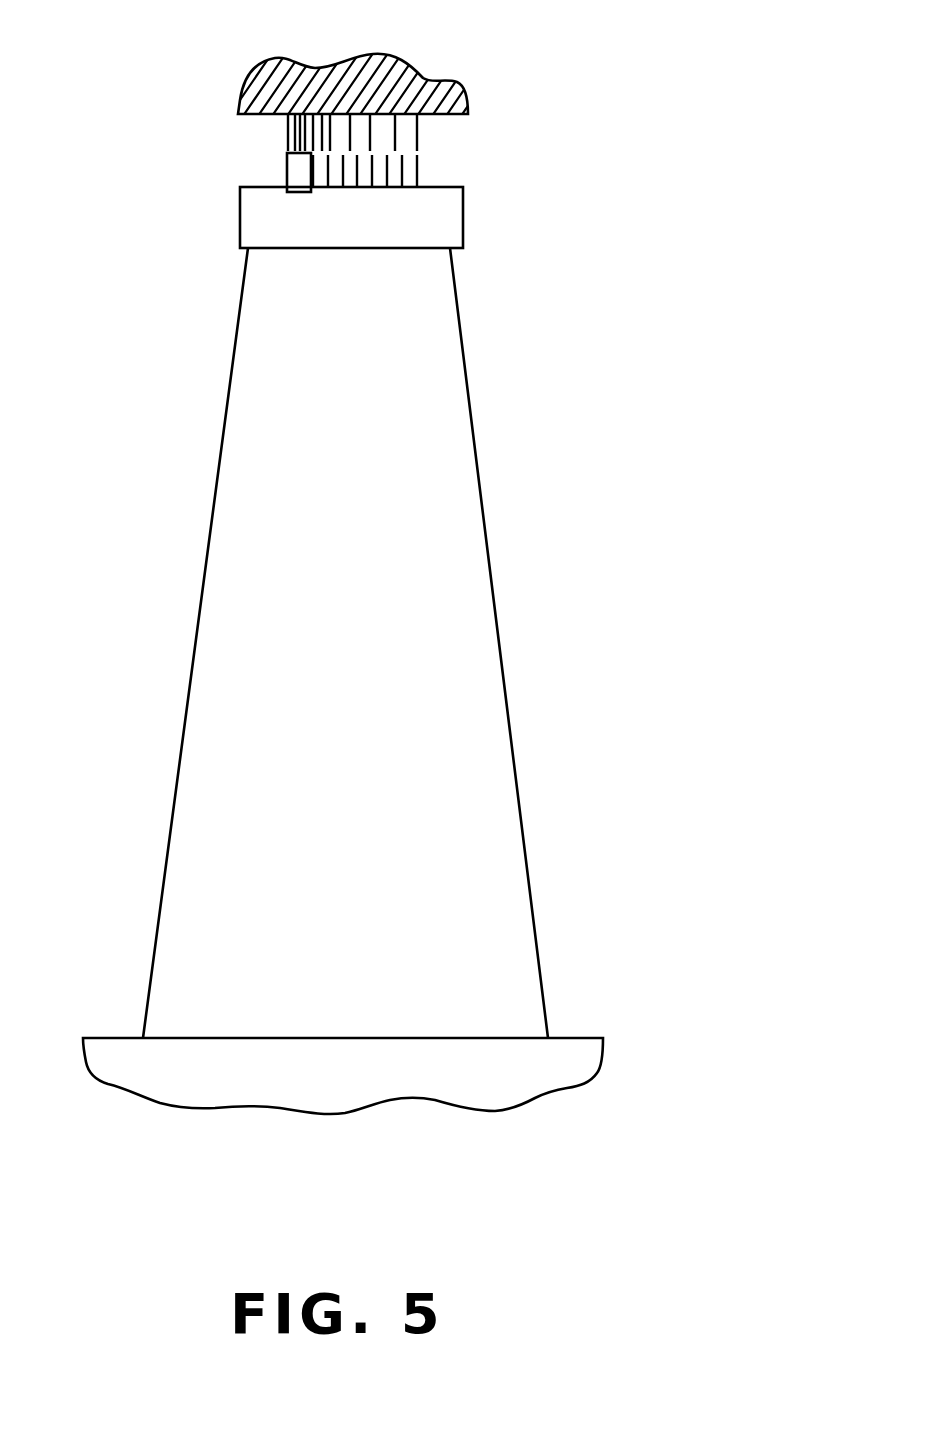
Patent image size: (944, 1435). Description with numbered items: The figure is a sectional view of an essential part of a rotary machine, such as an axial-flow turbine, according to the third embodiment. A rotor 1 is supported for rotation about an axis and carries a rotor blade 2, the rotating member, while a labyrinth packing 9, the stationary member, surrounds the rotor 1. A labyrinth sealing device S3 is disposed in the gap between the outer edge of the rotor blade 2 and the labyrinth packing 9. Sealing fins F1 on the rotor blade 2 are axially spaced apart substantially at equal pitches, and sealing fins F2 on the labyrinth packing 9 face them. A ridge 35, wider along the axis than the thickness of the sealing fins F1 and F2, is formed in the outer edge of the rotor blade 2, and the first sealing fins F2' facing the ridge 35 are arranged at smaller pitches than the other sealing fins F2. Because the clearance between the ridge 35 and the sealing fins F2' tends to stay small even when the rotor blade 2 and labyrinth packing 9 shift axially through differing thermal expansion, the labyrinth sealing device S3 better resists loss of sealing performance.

The labyrinth packing 9 is at (427, 76).
The rotor blade 2 is at (467, 600).
The rotor 1 is at (327, 1096).
The sealing fins F2 is at (442, 127).
The first sealing fins F2' is at (239, 93).
The sealing fins F1 is at (423, 165).
The labyrinth sealing device S3 is at (215, 103).
The ridge 35 is at (286, 165).